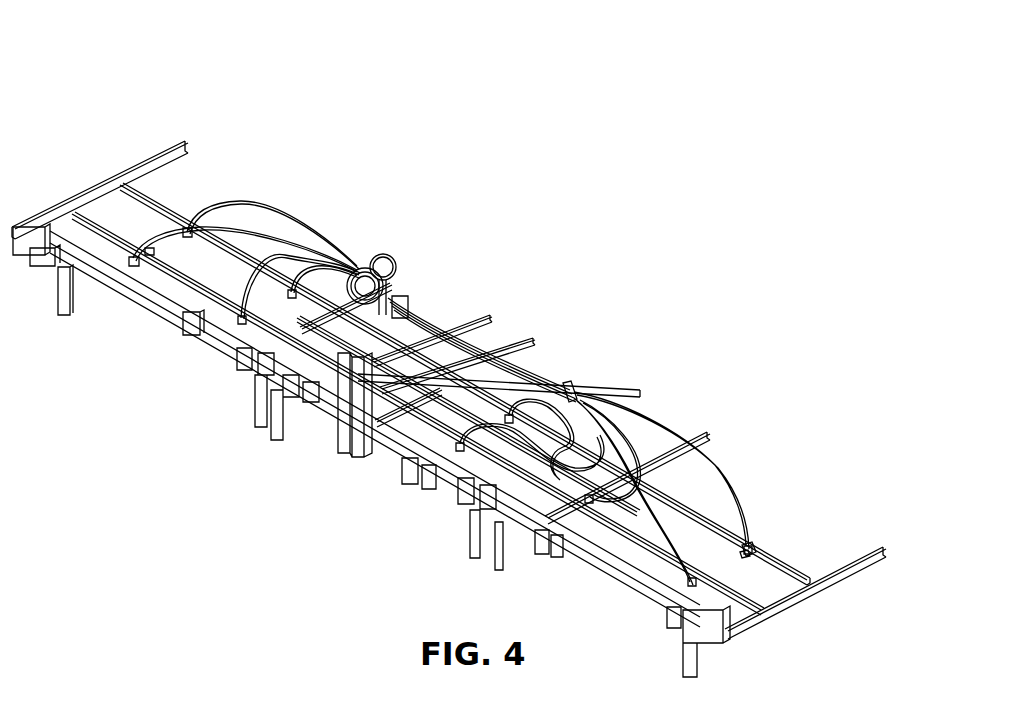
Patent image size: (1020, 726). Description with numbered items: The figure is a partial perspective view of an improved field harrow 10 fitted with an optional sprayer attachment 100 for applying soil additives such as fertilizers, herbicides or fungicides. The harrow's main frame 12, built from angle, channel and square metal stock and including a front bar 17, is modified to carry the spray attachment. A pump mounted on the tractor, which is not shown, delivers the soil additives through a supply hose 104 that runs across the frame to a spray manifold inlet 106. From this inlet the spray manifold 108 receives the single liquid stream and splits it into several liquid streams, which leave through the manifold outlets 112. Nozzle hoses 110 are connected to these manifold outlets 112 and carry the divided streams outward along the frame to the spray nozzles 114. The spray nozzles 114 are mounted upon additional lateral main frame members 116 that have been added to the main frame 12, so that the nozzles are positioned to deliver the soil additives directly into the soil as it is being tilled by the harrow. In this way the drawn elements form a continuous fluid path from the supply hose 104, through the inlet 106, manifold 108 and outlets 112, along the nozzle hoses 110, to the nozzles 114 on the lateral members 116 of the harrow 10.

The field harrow 10 is at (243, 128).
The main frame 12 is at (347, 468).
The front bar 17 is at (320, 412).
The sprayer attachment 100 is at (383, 222).
The supply hose 104 is at (263, 353).
The spray manifold inlet 106 is at (395, 302).
The spray manifold 108 is at (410, 316).
The nozzle hoses 110 is at (541, 338).
The manifold outlets 112 is at (481, 313).
The spray nozzles 114 is at (750, 548).
The additional lateral main frame members 116 is at (790, 572).